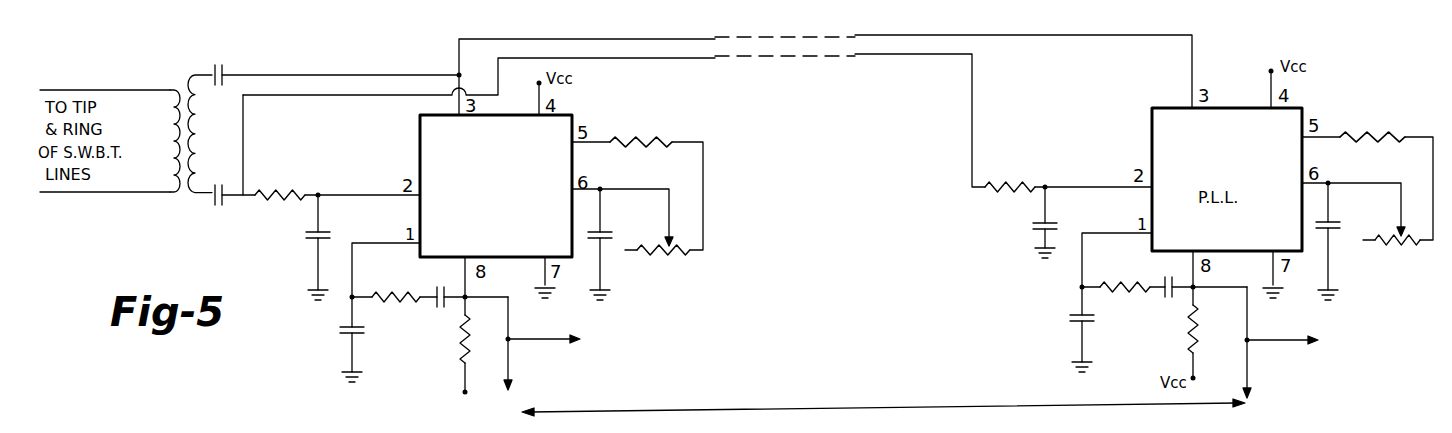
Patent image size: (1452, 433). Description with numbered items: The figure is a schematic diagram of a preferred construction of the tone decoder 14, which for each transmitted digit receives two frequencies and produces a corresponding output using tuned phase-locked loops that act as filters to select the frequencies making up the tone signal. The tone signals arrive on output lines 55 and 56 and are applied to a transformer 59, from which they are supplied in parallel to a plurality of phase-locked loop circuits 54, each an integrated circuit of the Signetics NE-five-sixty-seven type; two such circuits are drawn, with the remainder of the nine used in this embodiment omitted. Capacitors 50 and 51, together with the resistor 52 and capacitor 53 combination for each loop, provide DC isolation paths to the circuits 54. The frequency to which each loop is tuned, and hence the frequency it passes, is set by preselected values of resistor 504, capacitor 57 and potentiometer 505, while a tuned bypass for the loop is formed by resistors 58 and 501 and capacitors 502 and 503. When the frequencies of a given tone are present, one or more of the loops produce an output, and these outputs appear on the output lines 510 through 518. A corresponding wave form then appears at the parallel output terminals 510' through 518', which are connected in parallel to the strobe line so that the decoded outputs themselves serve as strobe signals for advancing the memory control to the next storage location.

The tone decoder 14 is at (699, 106).
The capacitor 50 is at (337, 66).
The capacitor 51 is at (226, 207).
The resistor 52 is at (280, 182).
The capacitor 53 is at (331, 247).
The phase-locked loop circuit 54 is at (496, 186).
The output line 55 is at (105, 75).
The output line 56 is at (105, 206).
The capacitor 57 is at (614, 244).
The resistor 58 is at (455, 335).
The transformer 59 is at (201, 134).
The resistor 501 is at (394, 291).
The capacitor 502 is at (345, 333).
The capacitor 503 is at (439, 306).
The resistor 504 is at (664, 121).
The potentiometer 505 is at (660, 258).
The output line 510 is at (530, 344).
The parallel output terminal 510' is at (603, 346).
The output line 518 is at (1267, 342).
The parallel output terminal 518' is at (1342, 336).